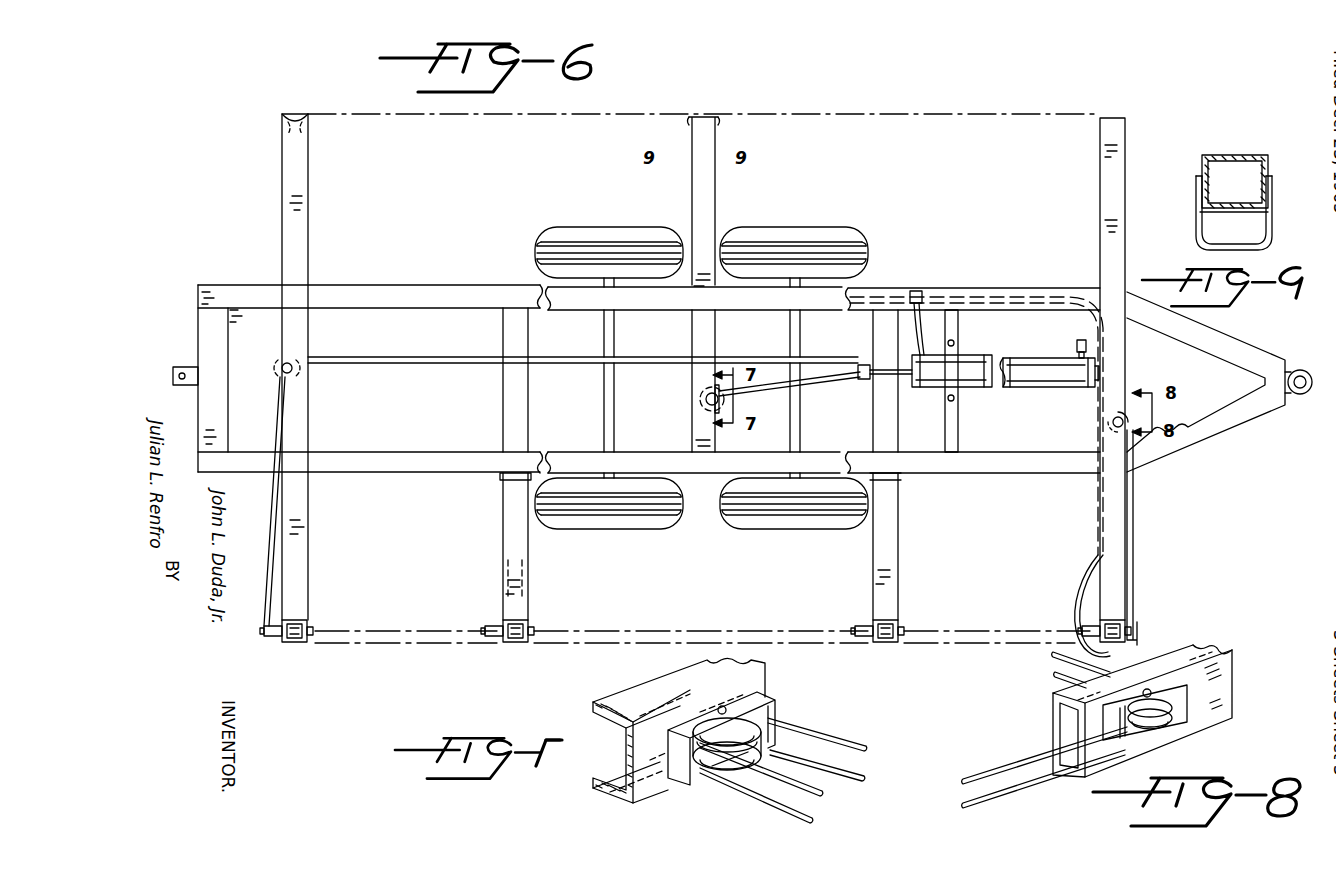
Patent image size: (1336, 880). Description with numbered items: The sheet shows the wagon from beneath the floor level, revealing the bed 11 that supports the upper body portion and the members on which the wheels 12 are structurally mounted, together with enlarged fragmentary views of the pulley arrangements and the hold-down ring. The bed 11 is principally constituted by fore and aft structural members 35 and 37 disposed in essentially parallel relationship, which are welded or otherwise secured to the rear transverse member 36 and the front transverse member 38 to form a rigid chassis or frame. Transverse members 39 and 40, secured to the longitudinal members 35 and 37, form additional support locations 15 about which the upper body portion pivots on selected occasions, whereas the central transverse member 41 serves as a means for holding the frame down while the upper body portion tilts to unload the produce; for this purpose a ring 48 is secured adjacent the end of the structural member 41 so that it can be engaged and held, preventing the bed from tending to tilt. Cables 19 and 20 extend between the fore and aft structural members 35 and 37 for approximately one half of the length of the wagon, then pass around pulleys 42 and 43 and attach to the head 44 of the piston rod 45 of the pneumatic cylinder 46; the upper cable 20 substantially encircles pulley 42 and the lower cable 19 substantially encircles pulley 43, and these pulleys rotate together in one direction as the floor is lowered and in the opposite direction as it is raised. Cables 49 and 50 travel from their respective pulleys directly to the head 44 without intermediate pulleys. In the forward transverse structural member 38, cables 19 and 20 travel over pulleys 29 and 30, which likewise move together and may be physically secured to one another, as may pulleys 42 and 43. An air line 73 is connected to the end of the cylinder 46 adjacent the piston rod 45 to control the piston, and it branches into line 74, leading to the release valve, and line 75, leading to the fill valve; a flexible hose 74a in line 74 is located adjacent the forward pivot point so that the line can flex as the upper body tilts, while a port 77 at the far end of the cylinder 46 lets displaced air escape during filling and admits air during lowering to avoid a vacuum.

In FIG. 6, the bed 11 is at (250, 152).
In FIG. 6, the wheels 12 is at (660, 531).
In FIG. 6, the support locations 15 is at (593, 634).
In FIG. 6, the lower cable 19 is at (1134, 588).
In FIG. 7, the lower cable 19 is at (864, 770).
In FIG. 8, the lower cable 19 is at (1050, 678).
In FIG. 7, the upper cable 20 is at (848, 728).
In FIG. 8, the upper cable 20 is at (1048, 652).
In FIG. 8, the pulley 29 is at (1146, 730).
In FIG. 8, the pulley 30 is at (1166, 684).
In FIG. 6, the fore and aft structural member 35 is at (406, 462).
In FIG. 6, the rear transverse member 36 is at (292, 228).
In FIG. 6, the fore and aft structural member 37 is at (400, 292).
In FIG. 6, the front transverse member 38 is at (1103, 245).
In FIG. 8, the front transverse member 38 is at (1208, 640).
In FIG. 6, the transverse member 39 is at (526, 563).
In FIG. 6, the transverse member 40 is at (876, 562).
In FIG. 6, the central transverse member 41 is at (710, 216).
In FIG. 7, the central transverse member 41 is at (644, 690).
In FIG. 9, the central transverse member 41 is at (1232, 156).
In FIG. 6, the pulley 42 is at (704, 406).
In FIG. 7, the pulley 42 is at (751, 710).
In FIG. 7, the pulley 43 is at (742, 782).
In FIG. 6, the head 44 is at (864, 378).
In FIG. 6, the piston rod 45 is at (865, 362).
In FIG. 6, the pneumatic cylinder 46 is at (1034, 370).
In FIG. 6, the ring 48 is at (743, 140).
In FIG. 9, the ring 48 is at (1272, 218).
In FIG. 6, the cable 49 is at (450, 356).
In FIG. 6, the cable 50 is at (429, 364).
In FIG. 6, the air line 73 is at (934, 318).
In FIG. 6, the line 74 is at (1116, 364).
In FIG. 6, the flexible hose 74a is at (1078, 596).
In FIG. 6, the line 75 is at (867, 292).
In FIG. 6, the port 77 is at (1080, 340).